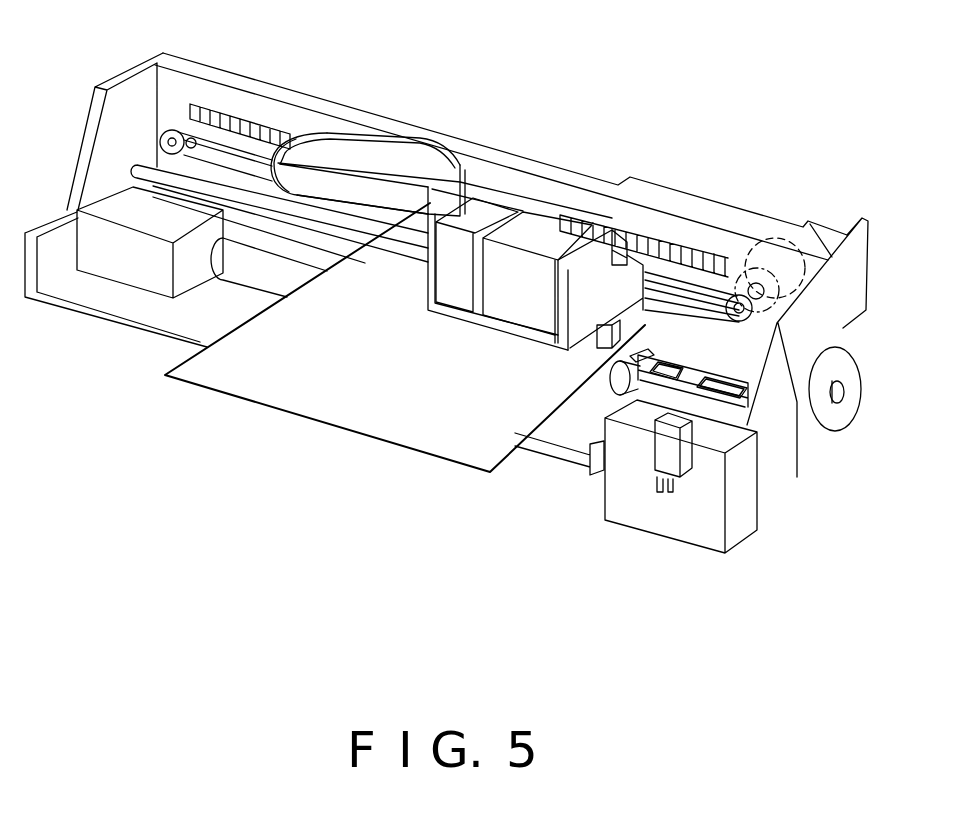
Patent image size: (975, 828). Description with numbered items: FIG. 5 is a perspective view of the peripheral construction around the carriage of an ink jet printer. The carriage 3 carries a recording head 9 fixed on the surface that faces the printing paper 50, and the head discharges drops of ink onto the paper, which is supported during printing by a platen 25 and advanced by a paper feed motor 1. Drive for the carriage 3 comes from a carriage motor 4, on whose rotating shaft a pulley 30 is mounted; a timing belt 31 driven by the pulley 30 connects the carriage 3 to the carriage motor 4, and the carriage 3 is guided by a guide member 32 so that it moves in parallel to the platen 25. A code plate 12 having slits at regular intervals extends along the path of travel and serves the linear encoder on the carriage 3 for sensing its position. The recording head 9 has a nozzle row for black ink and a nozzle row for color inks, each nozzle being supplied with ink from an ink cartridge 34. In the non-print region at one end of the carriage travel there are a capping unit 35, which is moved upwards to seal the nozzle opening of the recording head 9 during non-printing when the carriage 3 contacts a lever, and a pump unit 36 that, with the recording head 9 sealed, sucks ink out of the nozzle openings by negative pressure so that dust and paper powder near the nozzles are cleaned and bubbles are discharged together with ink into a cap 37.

The paper feed motor 1 is at (840, 393).
The carriage 3 is at (535, 245).
The carriage motor 4 is at (800, 206).
The recording head 9 is at (607, 348).
The code plate 12 is at (262, 133).
The platen 25 is at (252, 272).
The pulley 30 is at (757, 307).
The timing belt 31 is at (224, 140).
The guide member 32 is at (142, 163).
The ink cartridge 34 is at (553, 237).
The capping unit 35 is at (736, 320).
The pump unit 36 is at (727, 427).
The cap 37 is at (670, 366).
The printing paper 50 is at (360, 407).